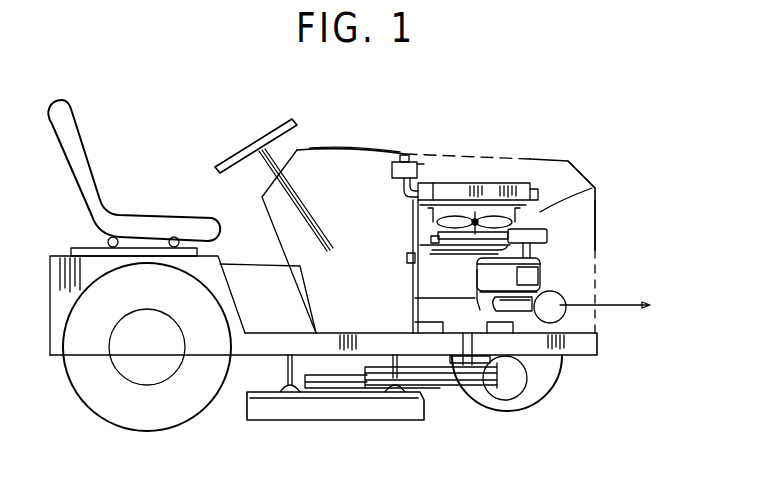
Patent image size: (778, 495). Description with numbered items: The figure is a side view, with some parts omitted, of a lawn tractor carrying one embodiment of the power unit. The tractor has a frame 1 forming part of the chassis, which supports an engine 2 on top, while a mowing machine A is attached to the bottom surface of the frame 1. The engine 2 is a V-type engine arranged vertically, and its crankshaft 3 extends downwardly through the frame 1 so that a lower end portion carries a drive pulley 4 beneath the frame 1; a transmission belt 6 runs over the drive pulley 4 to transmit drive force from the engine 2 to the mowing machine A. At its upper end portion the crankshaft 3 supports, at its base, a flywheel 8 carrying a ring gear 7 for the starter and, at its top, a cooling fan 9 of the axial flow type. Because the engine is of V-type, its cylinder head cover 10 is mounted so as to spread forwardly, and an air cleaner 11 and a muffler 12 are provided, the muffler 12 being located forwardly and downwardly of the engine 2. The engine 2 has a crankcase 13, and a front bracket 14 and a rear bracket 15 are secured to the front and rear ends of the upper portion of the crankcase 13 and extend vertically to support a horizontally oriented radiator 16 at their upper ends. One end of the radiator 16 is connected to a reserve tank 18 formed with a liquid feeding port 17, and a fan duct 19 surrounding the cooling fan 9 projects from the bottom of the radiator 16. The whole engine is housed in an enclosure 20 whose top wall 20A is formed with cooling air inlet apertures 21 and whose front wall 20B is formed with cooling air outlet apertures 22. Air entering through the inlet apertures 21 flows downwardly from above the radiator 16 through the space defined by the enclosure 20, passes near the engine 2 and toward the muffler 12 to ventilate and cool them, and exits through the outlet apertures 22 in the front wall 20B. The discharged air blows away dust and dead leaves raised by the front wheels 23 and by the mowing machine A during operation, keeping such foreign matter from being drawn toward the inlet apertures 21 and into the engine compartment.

The frame 1 is at (262, 350).
The engine 2 is at (542, 281).
The crankshaft 3 is at (476, 222).
The drive pulley 4 is at (468, 412).
The transmission belt 6 is at (420, 396).
The ring gear 7 is at (420, 240).
The flywheel 8 is at (411, 266).
The cooling fan 9 is at (496, 224).
The cylinder head cover 10 is at (541, 263).
The air cleaner 11 is at (547, 234).
The muffler 12 is at (566, 312).
The crankcase 13 is at (447, 240).
The front bracket 14 is at (606, 188).
The rear bracket 15 is at (412, 200).
The radiator 16 is at (497, 216).
The liquid feeding port 17 is at (403, 156).
The reserve tank 18 is at (392, 170).
The fan duct 19 is at (418, 225).
The enclosure 20 is at (597, 228).
The top wall 20A is at (335, 150).
The front wall 20B is at (597, 256).
The cooling air inlet apertures 21 is at (456, 200).
The cooling air outlet apertures 22 is at (598, 275).
The front wheels 23 is at (563, 392).
The mowing machine A is at (290, 412).